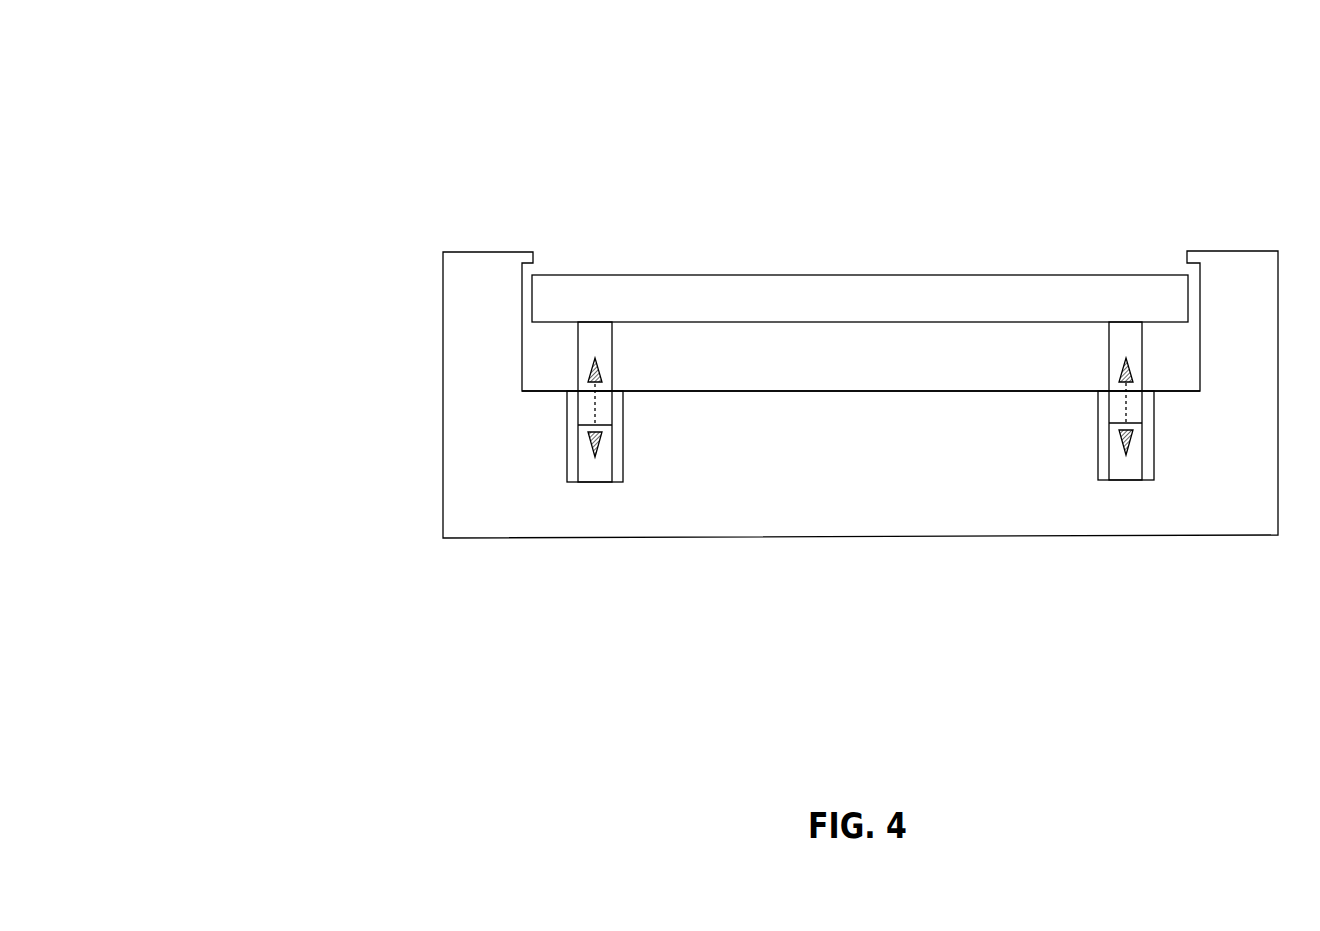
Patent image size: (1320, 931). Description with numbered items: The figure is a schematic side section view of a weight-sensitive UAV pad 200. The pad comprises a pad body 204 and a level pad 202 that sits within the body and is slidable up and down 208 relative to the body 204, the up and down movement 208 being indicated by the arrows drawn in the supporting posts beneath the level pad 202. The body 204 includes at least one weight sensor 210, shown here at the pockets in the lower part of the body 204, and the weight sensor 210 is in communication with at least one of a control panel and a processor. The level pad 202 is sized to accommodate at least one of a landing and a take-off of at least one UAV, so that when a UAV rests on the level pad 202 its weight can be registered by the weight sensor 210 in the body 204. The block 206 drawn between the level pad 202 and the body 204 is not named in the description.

The weight-sensitive UAV pad 200 is at (333, 63).
The level pad 202 is at (646, 287).
The pad body 204 is at (463, 273).
The base block 206 is at (592, 343).
The up and down sliding movement 208 is at (595, 408).
The weight sensor 210 is at (575, 467).